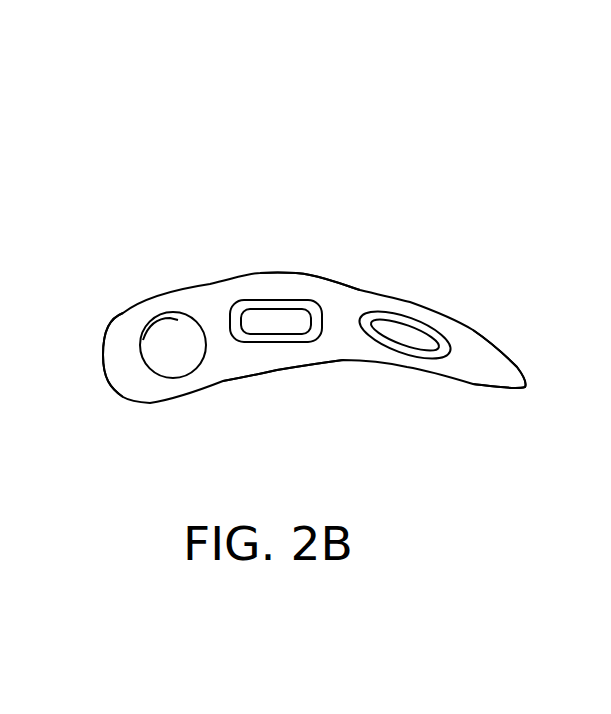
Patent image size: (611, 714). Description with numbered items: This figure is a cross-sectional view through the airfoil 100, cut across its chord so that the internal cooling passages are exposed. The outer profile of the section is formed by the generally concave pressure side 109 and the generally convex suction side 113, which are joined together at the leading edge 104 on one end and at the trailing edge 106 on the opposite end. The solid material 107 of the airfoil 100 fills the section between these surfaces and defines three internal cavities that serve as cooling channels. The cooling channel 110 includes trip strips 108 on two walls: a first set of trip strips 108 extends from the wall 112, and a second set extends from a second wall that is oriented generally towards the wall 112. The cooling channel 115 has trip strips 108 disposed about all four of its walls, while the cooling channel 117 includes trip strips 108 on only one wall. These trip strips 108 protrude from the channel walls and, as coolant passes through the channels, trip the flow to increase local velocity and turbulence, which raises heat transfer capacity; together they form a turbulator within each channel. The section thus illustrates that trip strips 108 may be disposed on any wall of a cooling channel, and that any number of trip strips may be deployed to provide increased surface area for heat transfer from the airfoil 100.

The airfoil 100 is at (412, 202).
The leading edge 104 is at (102, 382).
The trailing edge 106 is at (525, 387).
The material 107 is at (153, 387).
The trip strips 108 is at (153, 315).
The pressure side 109 is at (262, 373).
The cooling channel 110 is at (440, 343).
The wall 112 is at (402, 313).
The suction side 113 is at (313, 278).
The cooling channel 115 is at (255, 322).
The cooling channel 117 is at (155, 350).